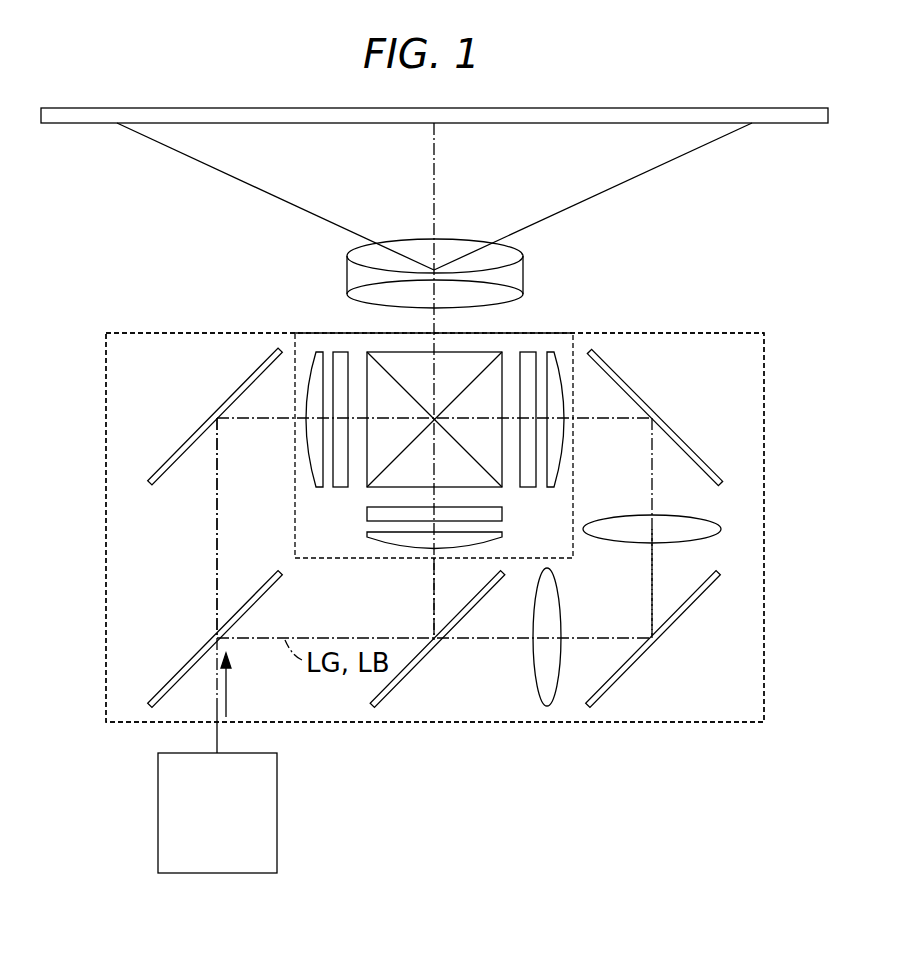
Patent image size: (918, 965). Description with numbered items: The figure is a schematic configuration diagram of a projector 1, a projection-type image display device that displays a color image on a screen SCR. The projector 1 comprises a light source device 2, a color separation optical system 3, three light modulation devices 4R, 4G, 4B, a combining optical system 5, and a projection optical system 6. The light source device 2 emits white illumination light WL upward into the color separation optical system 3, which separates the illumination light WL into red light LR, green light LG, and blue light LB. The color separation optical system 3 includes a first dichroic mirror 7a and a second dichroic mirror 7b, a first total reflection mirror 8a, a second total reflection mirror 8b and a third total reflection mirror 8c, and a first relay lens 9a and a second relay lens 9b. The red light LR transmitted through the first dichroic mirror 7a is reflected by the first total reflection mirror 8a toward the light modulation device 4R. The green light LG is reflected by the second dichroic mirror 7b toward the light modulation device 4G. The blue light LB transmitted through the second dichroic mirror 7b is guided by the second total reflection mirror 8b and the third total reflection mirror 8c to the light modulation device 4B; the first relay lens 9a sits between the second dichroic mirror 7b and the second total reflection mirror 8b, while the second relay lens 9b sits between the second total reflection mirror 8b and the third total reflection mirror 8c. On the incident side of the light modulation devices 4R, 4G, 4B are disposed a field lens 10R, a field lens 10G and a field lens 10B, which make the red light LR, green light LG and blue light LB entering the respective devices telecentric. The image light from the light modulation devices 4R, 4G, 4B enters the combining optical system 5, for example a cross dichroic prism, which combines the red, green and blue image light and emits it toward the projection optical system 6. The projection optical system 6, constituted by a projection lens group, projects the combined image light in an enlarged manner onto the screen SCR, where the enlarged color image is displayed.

The projector 1 is at (774, 306).
The light source device 2 is at (277, 845).
The color separation optical system 3 is at (106, 474).
The light modulation device 4R is at (340, 350).
The light modulation device 4G is at (367, 512).
The light modulation device 4B is at (528, 350).
The combining optical system 5 is at (456, 357).
The projection optical system 6 is at (416, 247).
The first dichroic mirror 7a is at (182, 667).
The second dichroic mirror 7b is at (418, 674).
The first total reflection mirror 8a is at (190, 435).
The second total reflection mirror 8b is at (682, 628).
The third total reflection mirror 8c is at (678, 430).
The first relay lens 9a is at (533, 660).
The second relay lens 9b is at (708, 520).
The field lens 10R is at (318, 350).
The field lens 10G is at (367, 538).
The field lens 10B is at (552, 350).
The screen SCR is at (796, 123).
The illumination light WL is at (226, 702).
The red light LR is at (217, 550).
The green light LG is at (434, 594).
The blue light LB is at (652, 586).